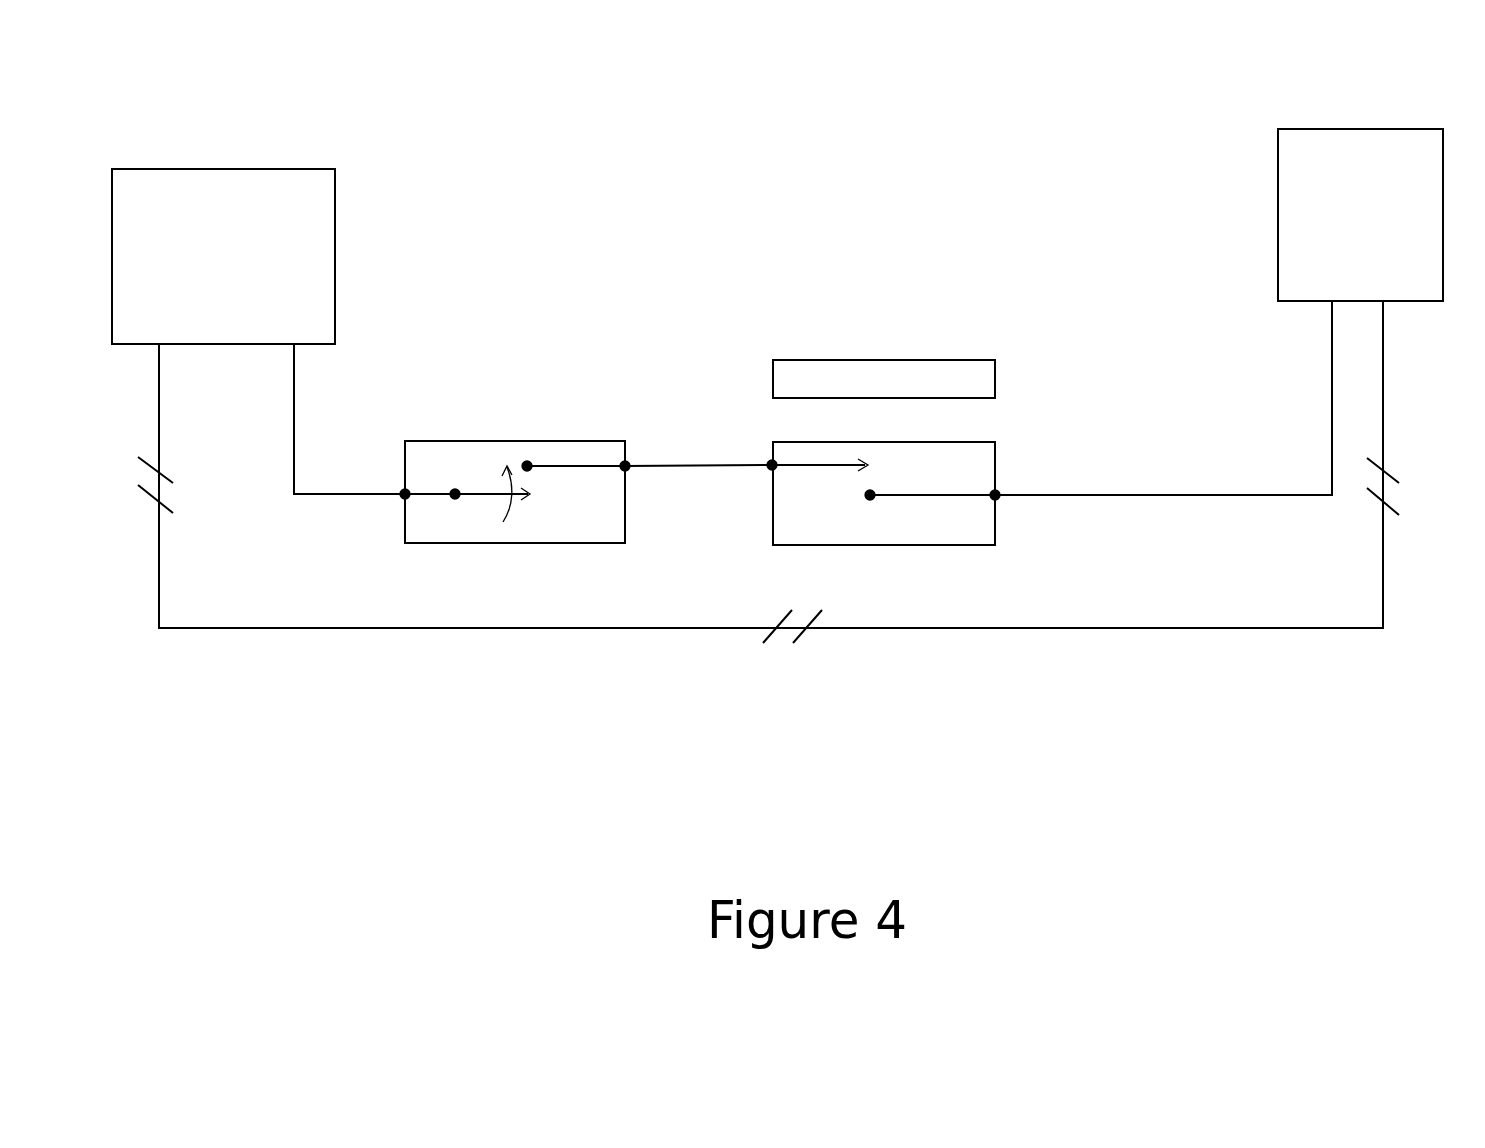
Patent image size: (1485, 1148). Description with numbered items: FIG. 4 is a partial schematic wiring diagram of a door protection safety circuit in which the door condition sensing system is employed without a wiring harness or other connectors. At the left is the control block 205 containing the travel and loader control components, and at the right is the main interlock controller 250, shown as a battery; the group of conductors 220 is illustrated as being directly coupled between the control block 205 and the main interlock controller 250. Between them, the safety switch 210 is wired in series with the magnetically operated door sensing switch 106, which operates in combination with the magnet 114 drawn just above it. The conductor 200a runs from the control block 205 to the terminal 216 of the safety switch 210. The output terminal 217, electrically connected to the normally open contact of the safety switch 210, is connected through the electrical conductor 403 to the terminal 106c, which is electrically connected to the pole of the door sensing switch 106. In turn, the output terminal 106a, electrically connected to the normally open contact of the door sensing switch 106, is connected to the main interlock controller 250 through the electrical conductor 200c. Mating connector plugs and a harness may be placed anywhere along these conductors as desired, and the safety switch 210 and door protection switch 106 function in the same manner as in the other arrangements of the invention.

The control block 205 is at (220, 169).
The main interlock controller 250 is at (1360, 129).
The safety switch 210 is at (450, 441).
The terminal 216 is at (405, 494).
The output terminal 217 is at (625, 466).
The electrical conductor 403 is at (705, 465).
The magnet 114 is at (885, 360).
The door sensing switch 106 is at (880, 545).
The output terminal 106a is at (995, 495).
The terminal 106c is at (770, 466).
The conductor 200a is at (294, 417).
The electrical conductor 200c is at (1332, 400).
The group of conductors 220 is at (612, 628).